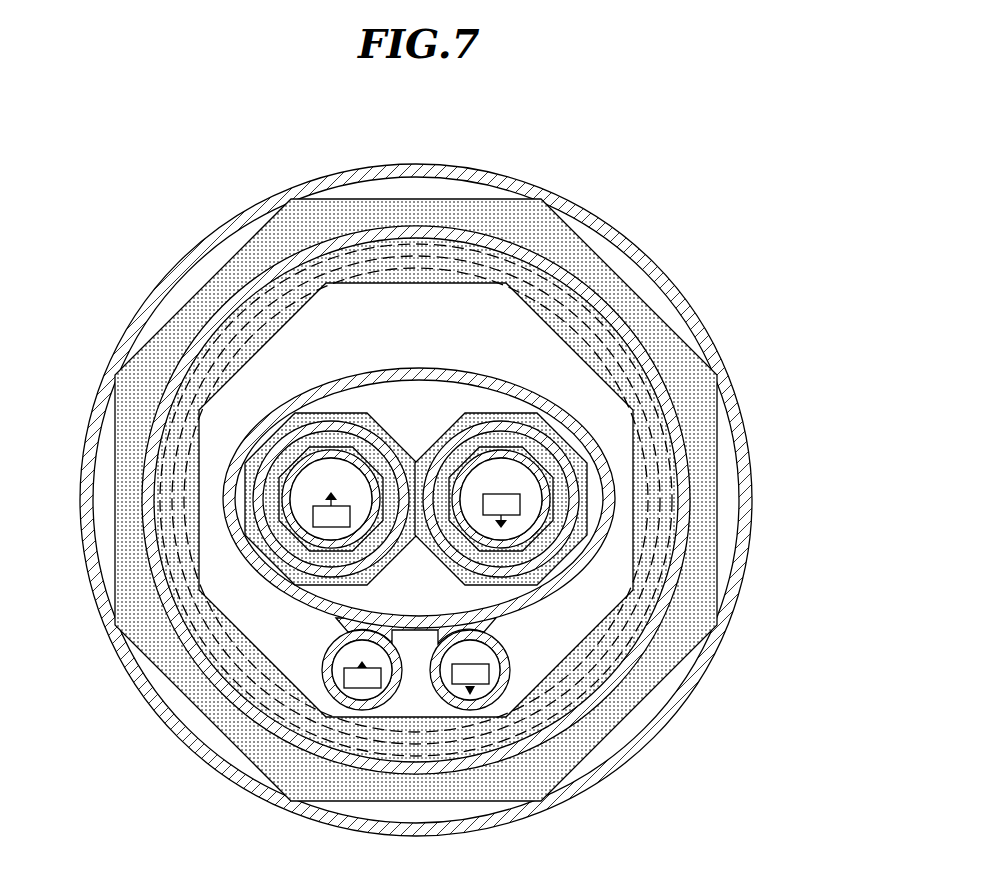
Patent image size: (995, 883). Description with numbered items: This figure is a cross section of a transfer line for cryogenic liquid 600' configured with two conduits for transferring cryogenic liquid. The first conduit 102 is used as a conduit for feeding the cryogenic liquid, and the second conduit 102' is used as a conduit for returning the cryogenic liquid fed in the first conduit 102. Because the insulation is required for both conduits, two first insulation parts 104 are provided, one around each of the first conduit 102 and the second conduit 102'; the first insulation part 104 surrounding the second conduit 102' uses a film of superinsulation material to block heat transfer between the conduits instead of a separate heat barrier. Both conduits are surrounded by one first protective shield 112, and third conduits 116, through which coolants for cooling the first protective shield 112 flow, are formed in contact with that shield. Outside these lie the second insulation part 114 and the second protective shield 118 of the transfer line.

The transfer line for cryogenic liquid 600' is at (410, 496).
The first conduit 102 is at (245, 591).
The second conduit 102' is at (617, 494).
The first insulation part 104 is at (247, 492).
The first protective shield 112 is at (540, 396).
The second insulation part 114 is at (608, 730).
The third conduit 116 is at (357, 712).
The second protective shield 118 is at (575, 790).